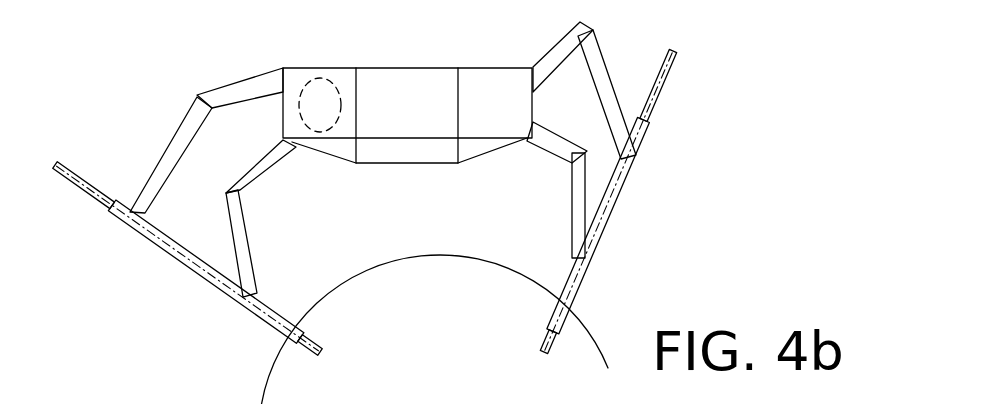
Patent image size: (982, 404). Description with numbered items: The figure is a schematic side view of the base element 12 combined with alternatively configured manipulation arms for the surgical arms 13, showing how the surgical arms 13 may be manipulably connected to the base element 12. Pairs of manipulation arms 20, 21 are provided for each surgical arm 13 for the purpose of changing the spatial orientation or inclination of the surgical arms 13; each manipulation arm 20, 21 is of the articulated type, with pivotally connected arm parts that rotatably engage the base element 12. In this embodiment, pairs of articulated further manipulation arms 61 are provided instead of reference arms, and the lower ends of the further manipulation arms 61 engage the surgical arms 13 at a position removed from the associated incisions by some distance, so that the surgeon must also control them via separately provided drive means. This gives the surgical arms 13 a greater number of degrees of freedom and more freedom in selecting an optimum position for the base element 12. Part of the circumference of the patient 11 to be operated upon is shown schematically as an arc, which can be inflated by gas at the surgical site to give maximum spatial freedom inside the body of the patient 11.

The patient 11 is at (595, 337).
The base element 12 is at (388, 92).
The surgical arm 13 is at (172, 250).
The manipulation arm 20 is at (437, 111).
The manipulation arm 21 is at (200, 76).
The further manipulation arm 61 is at (274, 199).